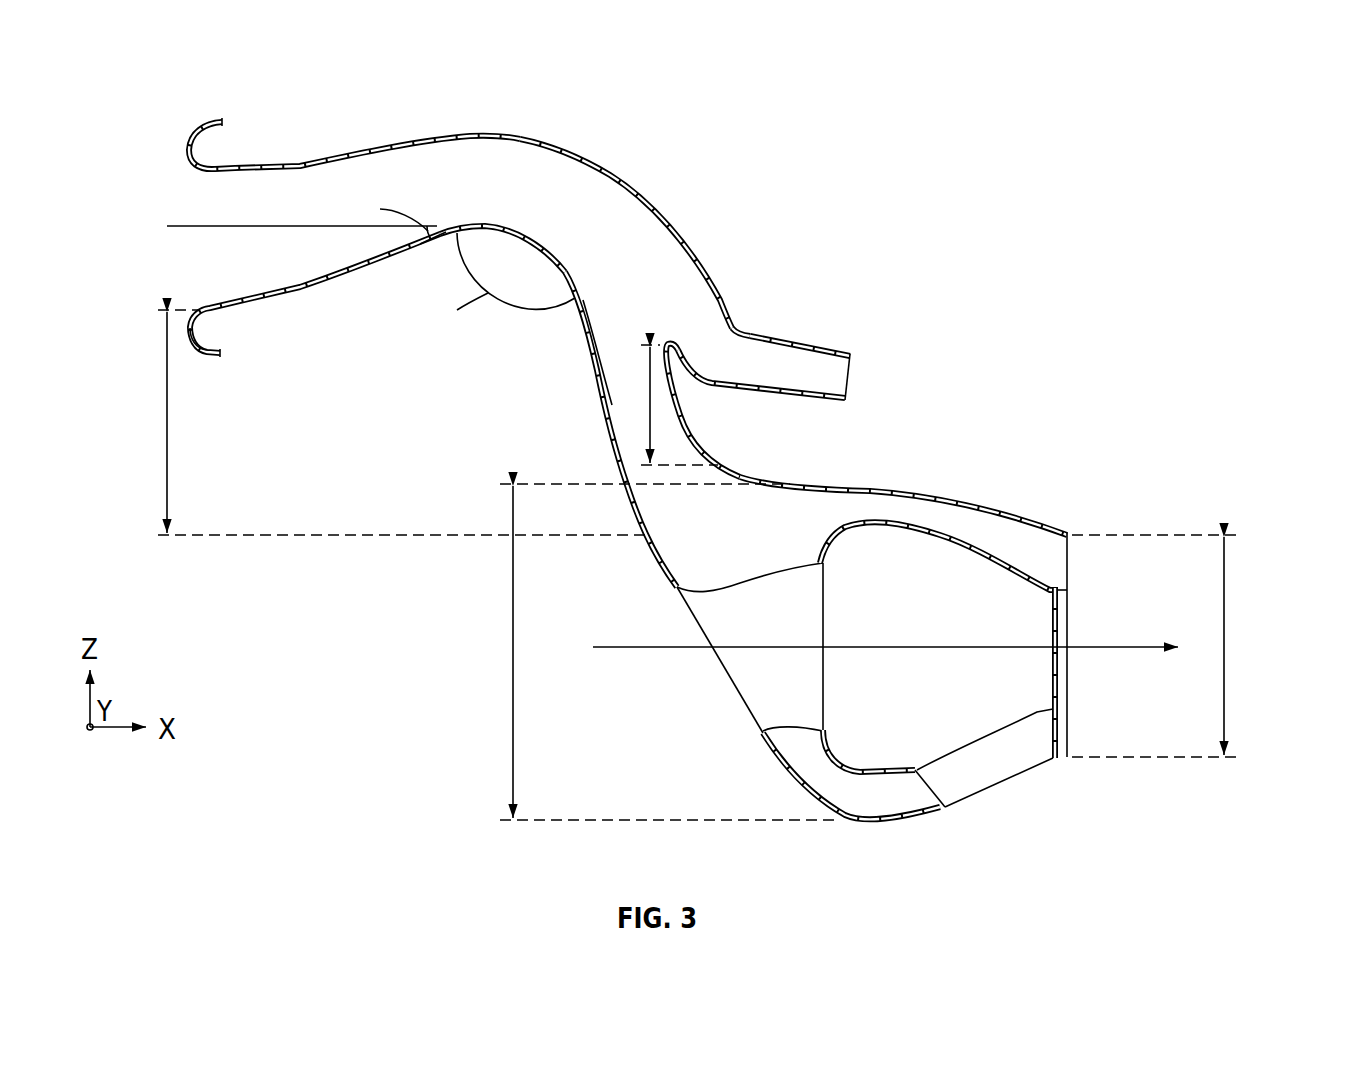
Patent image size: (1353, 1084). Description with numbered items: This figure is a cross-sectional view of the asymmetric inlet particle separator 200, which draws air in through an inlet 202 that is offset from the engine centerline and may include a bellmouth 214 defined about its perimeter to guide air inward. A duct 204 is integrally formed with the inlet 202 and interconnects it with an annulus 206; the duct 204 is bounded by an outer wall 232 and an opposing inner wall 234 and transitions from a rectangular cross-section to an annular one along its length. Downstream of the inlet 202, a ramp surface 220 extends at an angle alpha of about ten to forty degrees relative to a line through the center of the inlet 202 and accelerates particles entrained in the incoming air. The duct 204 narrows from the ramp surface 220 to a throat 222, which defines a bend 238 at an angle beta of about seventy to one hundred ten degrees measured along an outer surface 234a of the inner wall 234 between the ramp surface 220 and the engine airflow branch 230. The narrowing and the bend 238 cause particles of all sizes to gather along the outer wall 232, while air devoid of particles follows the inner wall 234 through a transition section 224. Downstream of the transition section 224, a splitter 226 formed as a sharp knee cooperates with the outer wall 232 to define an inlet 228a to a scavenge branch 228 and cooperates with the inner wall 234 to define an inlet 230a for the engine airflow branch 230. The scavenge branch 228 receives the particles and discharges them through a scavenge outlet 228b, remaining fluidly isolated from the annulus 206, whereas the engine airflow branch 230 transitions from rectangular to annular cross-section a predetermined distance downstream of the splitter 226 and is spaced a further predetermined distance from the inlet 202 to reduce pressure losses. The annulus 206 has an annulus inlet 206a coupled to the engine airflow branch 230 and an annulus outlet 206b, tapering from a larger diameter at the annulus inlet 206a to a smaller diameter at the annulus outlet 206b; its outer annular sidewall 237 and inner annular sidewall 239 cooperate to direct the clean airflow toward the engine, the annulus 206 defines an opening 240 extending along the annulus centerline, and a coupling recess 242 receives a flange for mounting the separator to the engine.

The asymmetric inlet particle separator 200 is at (846, 149).
The inlet 202 is at (167, 198).
The duct 204 is at (527, 361).
The annulus 206 is at (962, 454).
The annulus inlet 206a is at (817, 782).
The annulus outlet 206b is at (1062, 737).
The bellmouth 214 is at (217, 360).
The ramp surface 220 is at (312, 290).
The throat 222 is at (556, 127).
The transition section 224 is at (694, 198).
The splitter 226 is at (680, 362).
The scavenge branch 228 is at (832, 313).
The inlet to the scavenge branch 228a is at (717, 346).
The scavenge outlet 228b is at (852, 379).
The engine airflow branch 230 is at (637, 553).
The inlet for the engine airflow branch 230a is at (613, 381).
The outer wall 232 is at (436, 136).
The inner wall 234 is at (448, 234).
The outer surface of the inner wall 234a is at (607, 423).
The outer annular sidewall 237 is at (993, 502).
The bend 238 is at (548, 255).
The inner annular sidewall 239 is at (994, 558).
The opening 240 is at (1075, 593).
The coupling recess 242 is at (967, 798).